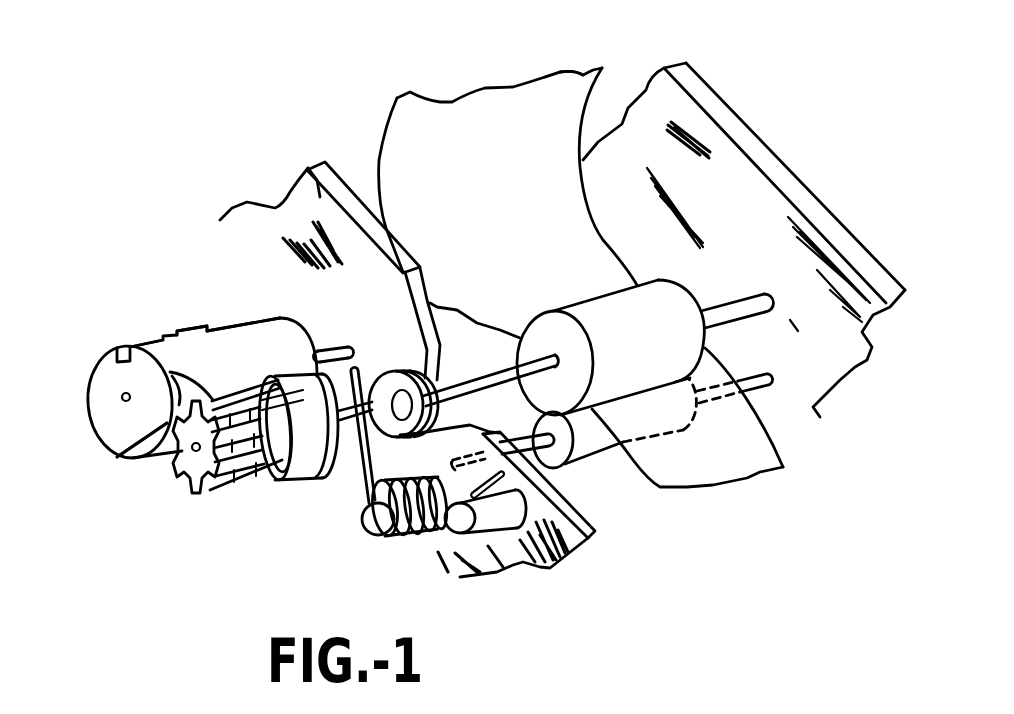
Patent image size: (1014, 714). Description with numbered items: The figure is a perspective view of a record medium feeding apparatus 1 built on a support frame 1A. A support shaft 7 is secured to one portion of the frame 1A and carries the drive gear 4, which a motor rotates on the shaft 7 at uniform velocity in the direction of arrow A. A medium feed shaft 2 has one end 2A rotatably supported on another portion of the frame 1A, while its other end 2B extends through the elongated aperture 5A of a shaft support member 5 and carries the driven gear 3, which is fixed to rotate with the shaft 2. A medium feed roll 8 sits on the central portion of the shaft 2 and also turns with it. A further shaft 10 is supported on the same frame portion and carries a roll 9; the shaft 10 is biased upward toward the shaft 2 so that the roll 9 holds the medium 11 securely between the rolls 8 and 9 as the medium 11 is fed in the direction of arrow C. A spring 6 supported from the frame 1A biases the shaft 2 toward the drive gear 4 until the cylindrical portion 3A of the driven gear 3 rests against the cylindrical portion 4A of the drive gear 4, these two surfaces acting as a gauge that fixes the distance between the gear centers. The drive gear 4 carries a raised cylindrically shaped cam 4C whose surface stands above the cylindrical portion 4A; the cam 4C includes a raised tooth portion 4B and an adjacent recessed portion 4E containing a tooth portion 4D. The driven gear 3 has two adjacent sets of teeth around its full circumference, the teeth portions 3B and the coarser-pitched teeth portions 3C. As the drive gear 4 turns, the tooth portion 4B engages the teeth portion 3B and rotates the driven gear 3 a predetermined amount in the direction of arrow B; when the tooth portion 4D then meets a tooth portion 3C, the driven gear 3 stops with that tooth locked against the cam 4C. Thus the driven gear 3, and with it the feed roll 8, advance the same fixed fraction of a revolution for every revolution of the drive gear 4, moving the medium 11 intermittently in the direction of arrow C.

The record medium feeding apparatus 1 is at (270, 90).
The support frame 1A is at (308, 168).
The medium feed shaft 2 is at (485, 378).
The end of medium feed shaft 2A is at (750, 303).
The other end of medium feed shaft 2B is at (342, 342).
The driven gear 3 is at (173, 458).
The cylindrical portion of driven gear 3A is at (322, 472).
The teeth portion of driven gear 3B is at (270, 478).
The teeth portion of driven gear 3C is at (240, 498).
The drive gear 4 is at (112, 385).
The cylindrical portion of drive gear 4A is at (260, 328).
The raised tooth portion of drive gear 4B is at (198, 330).
The cylindrically shaped cam 4C is at (126, 444).
The tooth portion of recessed portion 4D is at (124, 344).
The recessed portion of cam 4E is at (122, 346).
The shaft support member 5 is at (386, 374).
The elongated opening or aperture 5A is at (448, 398).
The spring 6 is at (364, 455).
The support shaft 7 is at (322, 345).
The medium feed roll 8 is at (605, 312).
The roll 9 is at (587, 442).
The shaft 10 is at (770, 383).
The medium 11 is at (548, 112).
The arrow A is at (84, 362).
The arrow B is at (170, 468).
The arrow C is at (478, 108).